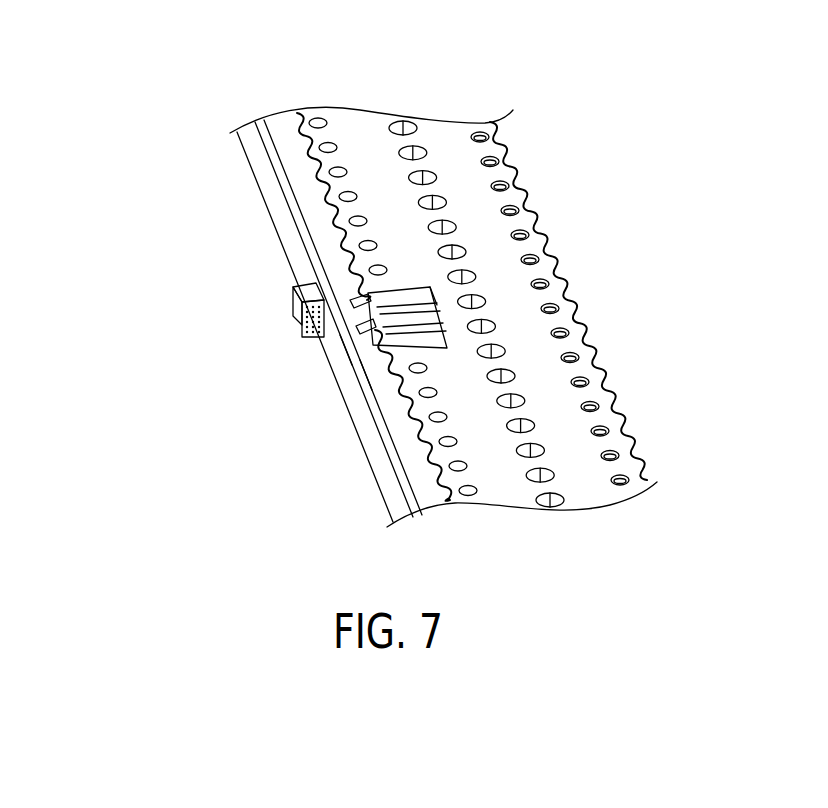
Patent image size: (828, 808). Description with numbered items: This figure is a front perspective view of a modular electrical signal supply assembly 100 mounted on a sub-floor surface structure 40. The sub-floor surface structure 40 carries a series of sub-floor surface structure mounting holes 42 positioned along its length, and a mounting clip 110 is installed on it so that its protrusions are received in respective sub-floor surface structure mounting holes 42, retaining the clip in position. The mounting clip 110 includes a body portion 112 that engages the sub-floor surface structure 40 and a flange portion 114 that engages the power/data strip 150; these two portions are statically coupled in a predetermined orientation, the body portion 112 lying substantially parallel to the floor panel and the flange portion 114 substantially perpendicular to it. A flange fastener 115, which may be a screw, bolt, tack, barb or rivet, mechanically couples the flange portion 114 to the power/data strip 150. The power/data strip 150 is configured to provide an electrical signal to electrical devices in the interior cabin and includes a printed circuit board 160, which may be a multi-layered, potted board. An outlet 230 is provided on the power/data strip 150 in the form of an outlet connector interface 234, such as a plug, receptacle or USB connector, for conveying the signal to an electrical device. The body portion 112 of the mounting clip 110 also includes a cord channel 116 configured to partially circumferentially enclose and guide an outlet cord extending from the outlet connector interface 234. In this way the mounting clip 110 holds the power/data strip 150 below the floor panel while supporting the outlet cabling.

The modular electrical signal supply assembly 100 is at (303, 74).
The sub-floor surface structure 40 is at (513, 151).
The sub-floor surface structure mounting hole 42 is at (459, 441).
The mounting clip 110 is at (394, 286).
The body portion 112 is at (438, 357).
The flange portion 114 is at (377, 380).
The flange fastener 115 is at (343, 357).
The cord channel 116 is at (361, 311).
The power/data strip 150 is at (354, 424).
The printed circuit board 160 is at (377, 460).
The outlet 230 is at (291, 284).
The outlet connector interface 234 is at (292, 312).